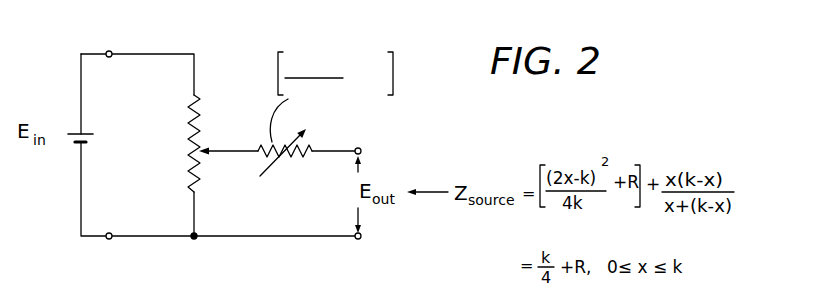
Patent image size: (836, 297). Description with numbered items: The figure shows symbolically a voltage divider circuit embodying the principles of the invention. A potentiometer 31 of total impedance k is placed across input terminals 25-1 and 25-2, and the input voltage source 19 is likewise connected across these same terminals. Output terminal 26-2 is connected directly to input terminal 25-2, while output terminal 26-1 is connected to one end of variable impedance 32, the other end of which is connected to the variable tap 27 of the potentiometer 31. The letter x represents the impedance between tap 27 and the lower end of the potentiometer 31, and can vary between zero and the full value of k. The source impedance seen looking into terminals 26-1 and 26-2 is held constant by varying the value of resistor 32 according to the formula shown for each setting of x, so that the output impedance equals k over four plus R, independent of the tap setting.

The input voltage source 19 is at (70, 146).
The input terminal 25-1 is at (116, 44).
The input terminal 25-2 is at (107, 240).
The output terminal 26-1 is at (361, 148).
The output terminal 26-2 is at (356, 240).
The variable tap 27 is at (239, 152).
The potentiometer 31 is at (187, 133).
The variable impedance 32 is at (301, 156).